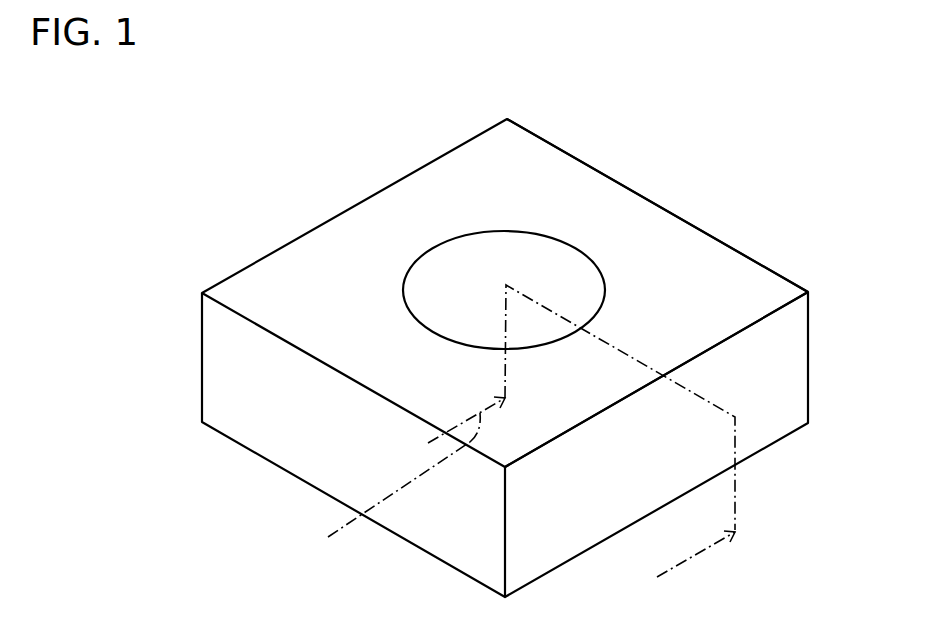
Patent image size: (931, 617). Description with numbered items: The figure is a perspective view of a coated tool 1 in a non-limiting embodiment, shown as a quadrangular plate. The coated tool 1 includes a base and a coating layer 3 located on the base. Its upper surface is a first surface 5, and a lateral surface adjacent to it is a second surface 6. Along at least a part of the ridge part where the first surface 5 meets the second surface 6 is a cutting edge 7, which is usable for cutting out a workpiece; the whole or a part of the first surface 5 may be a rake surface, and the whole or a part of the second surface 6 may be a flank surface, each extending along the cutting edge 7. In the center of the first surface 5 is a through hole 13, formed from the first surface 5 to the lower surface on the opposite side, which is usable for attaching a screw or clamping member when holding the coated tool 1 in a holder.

The coated tool 1 is at (231, 183).
The coating layer 3 is at (583, 203).
The first surface 5 is at (693, 265).
The second surface 6 is at (778, 367).
The cutting edge 7 is at (761, 318).
The through hole 13 is at (453, 238).